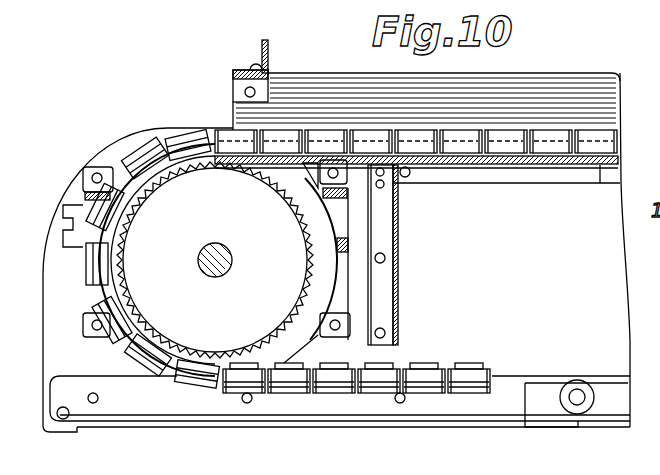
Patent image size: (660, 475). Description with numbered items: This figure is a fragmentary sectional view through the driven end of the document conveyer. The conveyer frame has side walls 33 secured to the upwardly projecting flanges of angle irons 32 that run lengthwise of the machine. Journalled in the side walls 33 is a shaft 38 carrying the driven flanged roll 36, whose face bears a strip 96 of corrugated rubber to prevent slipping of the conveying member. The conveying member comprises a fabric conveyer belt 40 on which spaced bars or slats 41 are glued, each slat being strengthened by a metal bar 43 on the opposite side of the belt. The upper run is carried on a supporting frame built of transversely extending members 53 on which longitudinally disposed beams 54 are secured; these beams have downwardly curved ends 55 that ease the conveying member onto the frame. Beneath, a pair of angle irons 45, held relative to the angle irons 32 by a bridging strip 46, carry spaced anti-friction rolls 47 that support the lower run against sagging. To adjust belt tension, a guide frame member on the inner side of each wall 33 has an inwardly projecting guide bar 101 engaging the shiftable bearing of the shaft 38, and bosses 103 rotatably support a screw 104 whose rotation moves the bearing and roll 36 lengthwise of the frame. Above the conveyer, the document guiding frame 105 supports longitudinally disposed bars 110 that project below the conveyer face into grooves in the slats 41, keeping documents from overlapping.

The angle irons 32 is at (192, 405).
The sides of the conveyer frame 33 is at (622, 268).
The flanged roll 36 is at (215, 260).
The shaft 38 is at (228, 251).
The conveyer belt 40 is at (532, 160).
The bars or slats 41 is at (555, 143).
The bar 43 is at (470, 160).
The angle irons 45 is at (537, 397).
The bridging strip 46 is at (440, 420).
The anti-friction rolls 47 is at (578, 382).
The transversely extending members 53 is at (396, 248).
The longitudinally disposed beams 54 is at (605, 160).
The downwardly curved ends 55 is at (333, 168).
The strip of corrugated rubber 96 is at (312, 268).
The guide bar 101 is at (115, 170).
The bosses 103 is at (340, 209).
The screw 104 is at (62, 210).
The frame 105 is at (270, 63).
The longitudinally disposed bars 110 is at (537, 74).